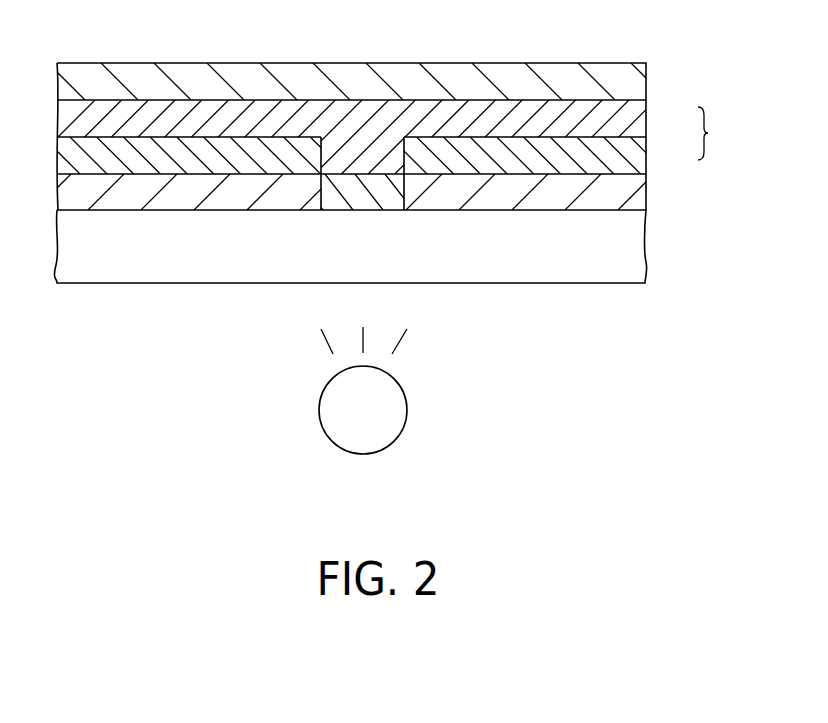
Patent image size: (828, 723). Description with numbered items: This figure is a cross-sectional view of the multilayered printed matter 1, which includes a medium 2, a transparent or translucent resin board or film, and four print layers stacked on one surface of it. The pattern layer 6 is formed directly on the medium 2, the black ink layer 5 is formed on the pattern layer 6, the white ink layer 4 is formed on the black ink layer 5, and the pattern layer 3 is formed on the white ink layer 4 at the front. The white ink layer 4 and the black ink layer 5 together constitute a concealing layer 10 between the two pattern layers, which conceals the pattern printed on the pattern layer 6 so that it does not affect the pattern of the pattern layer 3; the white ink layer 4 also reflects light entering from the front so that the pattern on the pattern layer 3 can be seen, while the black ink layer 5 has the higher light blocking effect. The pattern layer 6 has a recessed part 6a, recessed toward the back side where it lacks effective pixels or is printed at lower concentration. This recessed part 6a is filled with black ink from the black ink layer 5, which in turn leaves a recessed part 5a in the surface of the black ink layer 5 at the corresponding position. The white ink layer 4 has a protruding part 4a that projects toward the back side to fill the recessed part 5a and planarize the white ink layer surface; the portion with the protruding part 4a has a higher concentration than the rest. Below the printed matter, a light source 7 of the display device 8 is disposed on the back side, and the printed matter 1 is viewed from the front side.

The multilayered printed matter 1 is at (636, 38).
The medium 2 is at (648, 250).
The pattern layer 3 is at (647, 85).
The white ink layer 4 is at (647, 122).
The protruding part 4a is at (347, 172).
The black ink layer 5 is at (647, 157).
The recessed part 5a is at (322, 152).
The pattern layer 6 is at (647, 195).
The recessed part 6a is at (404, 184).
The light source 7 is at (363, 454).
The display device 8 is at (167, 383).
The concealing layer 10 is at (718, 133).